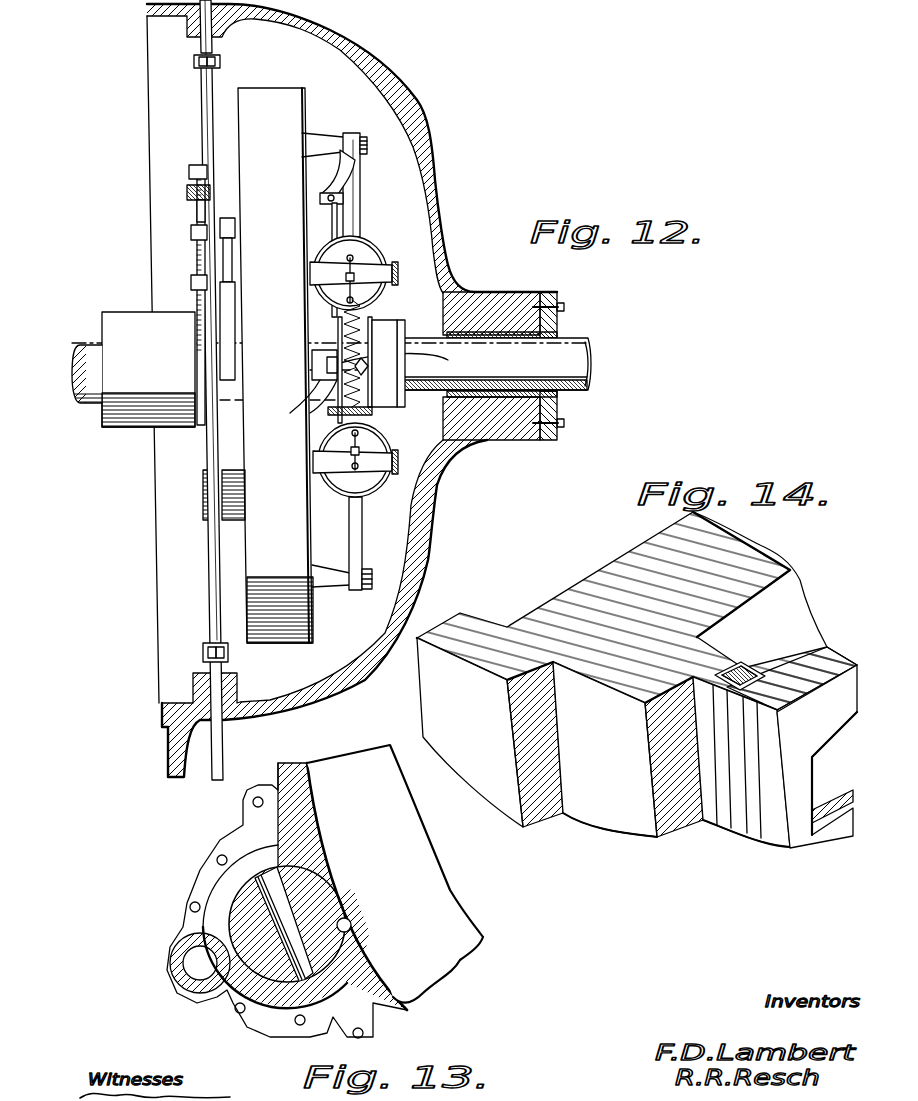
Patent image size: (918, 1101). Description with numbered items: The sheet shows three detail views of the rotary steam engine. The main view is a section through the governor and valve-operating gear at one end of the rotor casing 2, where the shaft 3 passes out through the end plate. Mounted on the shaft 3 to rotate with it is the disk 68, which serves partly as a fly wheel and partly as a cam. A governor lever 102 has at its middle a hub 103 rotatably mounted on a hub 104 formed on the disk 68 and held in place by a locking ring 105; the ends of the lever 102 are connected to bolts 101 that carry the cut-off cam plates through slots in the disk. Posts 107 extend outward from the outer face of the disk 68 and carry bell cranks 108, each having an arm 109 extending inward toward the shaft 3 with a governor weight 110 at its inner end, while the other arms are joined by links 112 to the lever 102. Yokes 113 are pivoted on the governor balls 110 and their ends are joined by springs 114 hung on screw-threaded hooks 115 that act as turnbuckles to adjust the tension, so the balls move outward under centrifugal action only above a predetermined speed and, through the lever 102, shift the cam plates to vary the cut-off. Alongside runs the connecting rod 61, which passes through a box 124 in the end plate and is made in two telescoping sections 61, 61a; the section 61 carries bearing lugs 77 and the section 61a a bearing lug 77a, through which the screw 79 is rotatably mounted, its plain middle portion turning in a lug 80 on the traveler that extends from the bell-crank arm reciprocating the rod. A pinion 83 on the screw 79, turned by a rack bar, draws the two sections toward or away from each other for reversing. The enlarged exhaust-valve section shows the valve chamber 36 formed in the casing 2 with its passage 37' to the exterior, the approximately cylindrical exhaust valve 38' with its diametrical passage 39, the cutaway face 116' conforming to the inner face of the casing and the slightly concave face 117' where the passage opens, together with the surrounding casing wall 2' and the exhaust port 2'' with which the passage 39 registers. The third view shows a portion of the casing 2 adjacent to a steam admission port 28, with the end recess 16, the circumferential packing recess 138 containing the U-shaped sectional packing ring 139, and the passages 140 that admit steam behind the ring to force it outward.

In FIG. 12, the shaft 3 is at (91, 403).
In FIG. 12, the connecting rod 61 is at (205, 107).
In FIG. 12, the rod section 61a is at (210, 212).
In FIG. 12, the disk 68 is at (275, 365).
In FIG. 12, the bearing lug 77 is at (190, 171).
In FIG. 12, the bearing lug 77a is at (192, 283).
In FIG. 12, the screw 79 is at (197, 255).
In FIG. 12, the lug 80 is at (192, 230).
In FIG. 12, the pinion 83 is at (208, 195).
In FIG. 12, the bolt 101 is at (280, 345).
In FIG. 12, the governor lever 102 is at (323, 393).
In FIG. 12, the hub 103 is at (494, 364).
In FIG. 12, the hub 104 is at (400, 381).
In FIG. 12, the locking ring 105 is at (372, 323).
In FIG. 12, the post 107 is at (329, 143).
In FIG. 12, the bell crank 108 is at (345, 158).
In FIG. 12, the arm 109 is at (355, 207).
In FIG. 12, the governor weight 110 is at (375, 244).
In FIG. 12, the link 112 is at (330, 256).
In FIG. 12, the yoke 113 is at (400, 267).
In FIG. 12, the spring 114 is at (410, 362).
In FIG. 12, the screw threaded hook 115 is at (357, 288).
In FIG. 12, the box 124 is at (224, 33).
In FIG. 14, the rotor casing 2 is at (637, 669).
In FIG. 14, the recess 16 is at (605, 749).
In FIG. 14, the steam admission port 28 is at (792, 747).
In FIG. 14, the packing recess 138 is at (760, 676).
In FIG. 14, the sectional packing ring 139 is at (733, 669).
In FIG. 14, the passage 140 is at (760, 669).
In FIG. 13, the rotor casing 2' is at (342, 886).
In FIG. 13, the exhaust port 2'' is at (395, 874).
In FIG. 13, the exhaust valve chamber 36 is at (290, 995).
In FIG. 13, the passage 37' is at (196, 985).
In FIG. 13, the exhaust valve 38' is at (298, 969).
In FIG. 13, the passage 39 is at (281, 907).
In FIG. 13, the cutaway face 116' is at (371, 930).
In FIG. 13, the concave face 117' is at (287, 912).